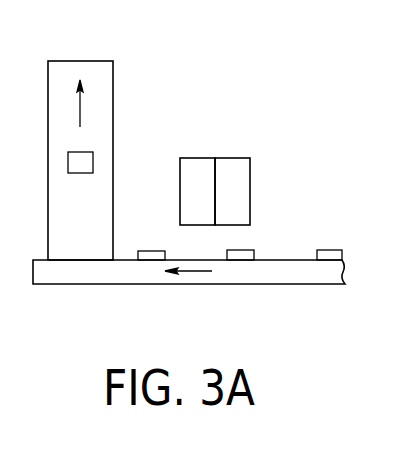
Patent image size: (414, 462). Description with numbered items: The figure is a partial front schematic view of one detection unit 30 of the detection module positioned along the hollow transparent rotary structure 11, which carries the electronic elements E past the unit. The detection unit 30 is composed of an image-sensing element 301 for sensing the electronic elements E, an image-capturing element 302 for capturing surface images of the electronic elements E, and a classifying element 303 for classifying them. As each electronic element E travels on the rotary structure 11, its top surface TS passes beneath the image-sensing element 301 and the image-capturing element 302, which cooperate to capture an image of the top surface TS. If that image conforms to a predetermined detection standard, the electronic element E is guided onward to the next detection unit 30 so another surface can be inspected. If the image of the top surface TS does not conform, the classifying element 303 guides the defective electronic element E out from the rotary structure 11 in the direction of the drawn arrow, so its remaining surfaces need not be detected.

The hollow transparent rotary structure 11 is at (65, 285).
The detection unit 30 is at (255, 83).
The image-sensing element 301 is at (237, 165).
The image-capturing element 302 is at (193, 162).
The classifying element 303 is at (108, 90).
The top surface TS is at (243, 248).
The electronic element E is at (328, 245).